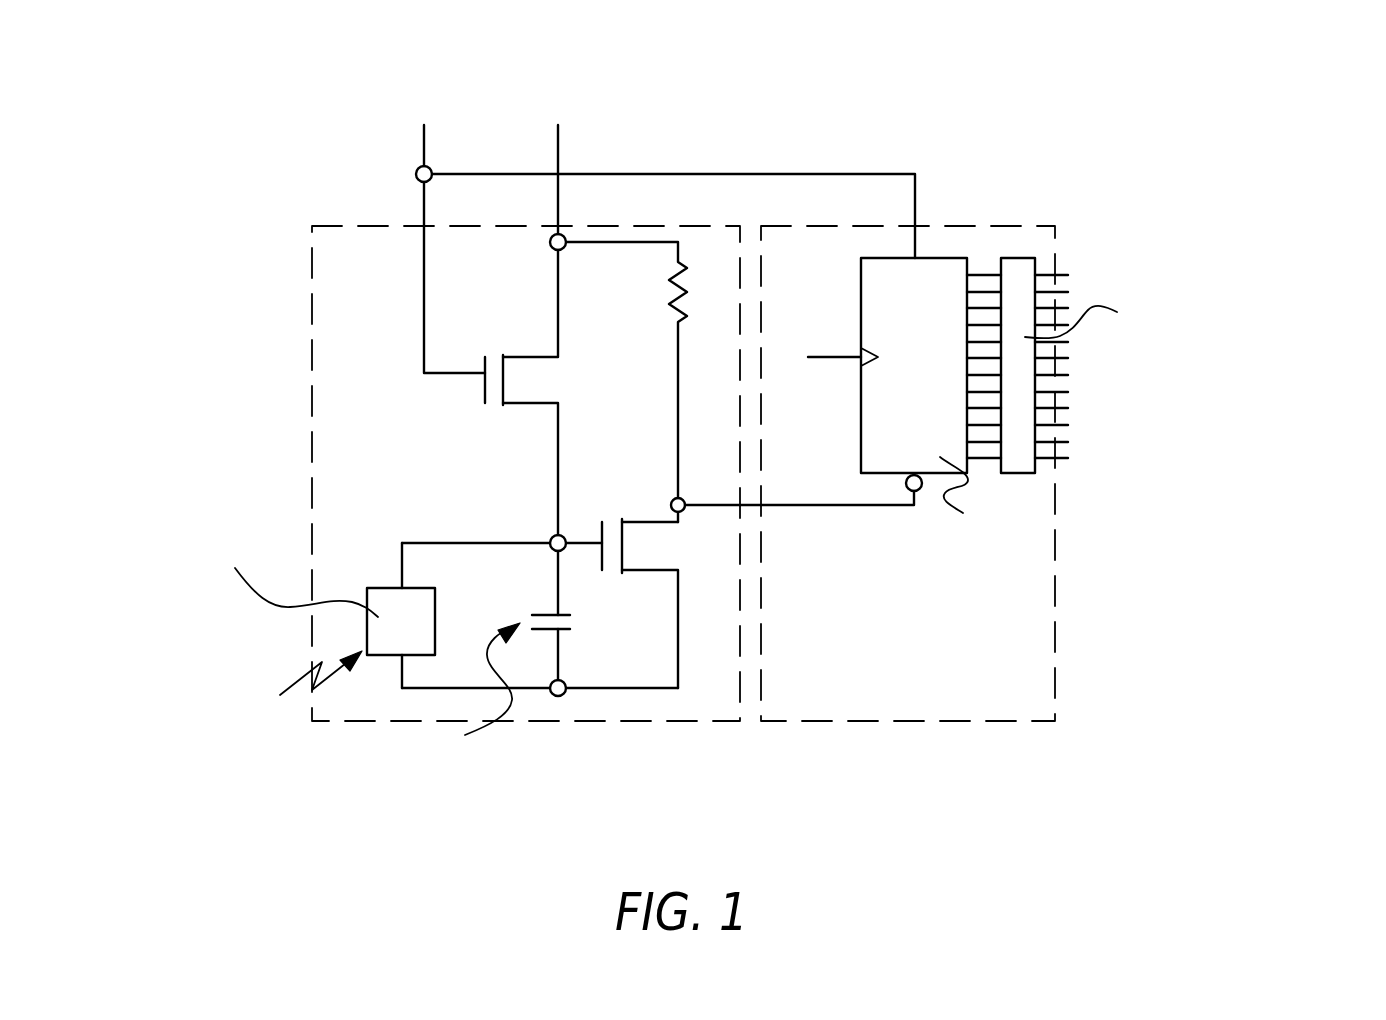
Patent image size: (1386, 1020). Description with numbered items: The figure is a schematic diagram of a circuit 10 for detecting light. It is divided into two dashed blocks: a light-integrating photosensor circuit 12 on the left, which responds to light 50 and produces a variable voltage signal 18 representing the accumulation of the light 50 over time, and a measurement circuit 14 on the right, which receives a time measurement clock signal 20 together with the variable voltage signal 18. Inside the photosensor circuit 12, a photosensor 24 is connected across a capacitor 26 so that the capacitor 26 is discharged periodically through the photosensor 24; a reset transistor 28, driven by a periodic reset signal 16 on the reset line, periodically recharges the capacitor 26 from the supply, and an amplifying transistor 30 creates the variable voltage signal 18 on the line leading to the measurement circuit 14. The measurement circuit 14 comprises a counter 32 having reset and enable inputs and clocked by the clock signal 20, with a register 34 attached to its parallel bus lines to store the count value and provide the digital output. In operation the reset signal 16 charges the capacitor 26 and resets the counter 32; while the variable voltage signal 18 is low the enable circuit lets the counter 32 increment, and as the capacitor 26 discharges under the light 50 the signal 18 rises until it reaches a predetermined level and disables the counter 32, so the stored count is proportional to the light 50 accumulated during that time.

The circuit for detecting light 10 is at (860, 132).
The light-integrating photosensor circuit 12 is at (670, 722).
The measurement circuit 14 is at (887, 722).
The periodic reset signal 16 is at (707, 175).
The variable voltage signal 18 is at (845, 507).
The time measurement clock signal 20 is at (818, 357).
The photosensor 24 is at (367, 590).
The capacitor 26 is at (545, 614).
The reset transistor 28 is at (515, 406).
The amplifying transistor 30 is at (605, 568).
The counter 32 is at (945, 258).
The register 34 is at (1020, 258).
The light 50 is at (327, 687).